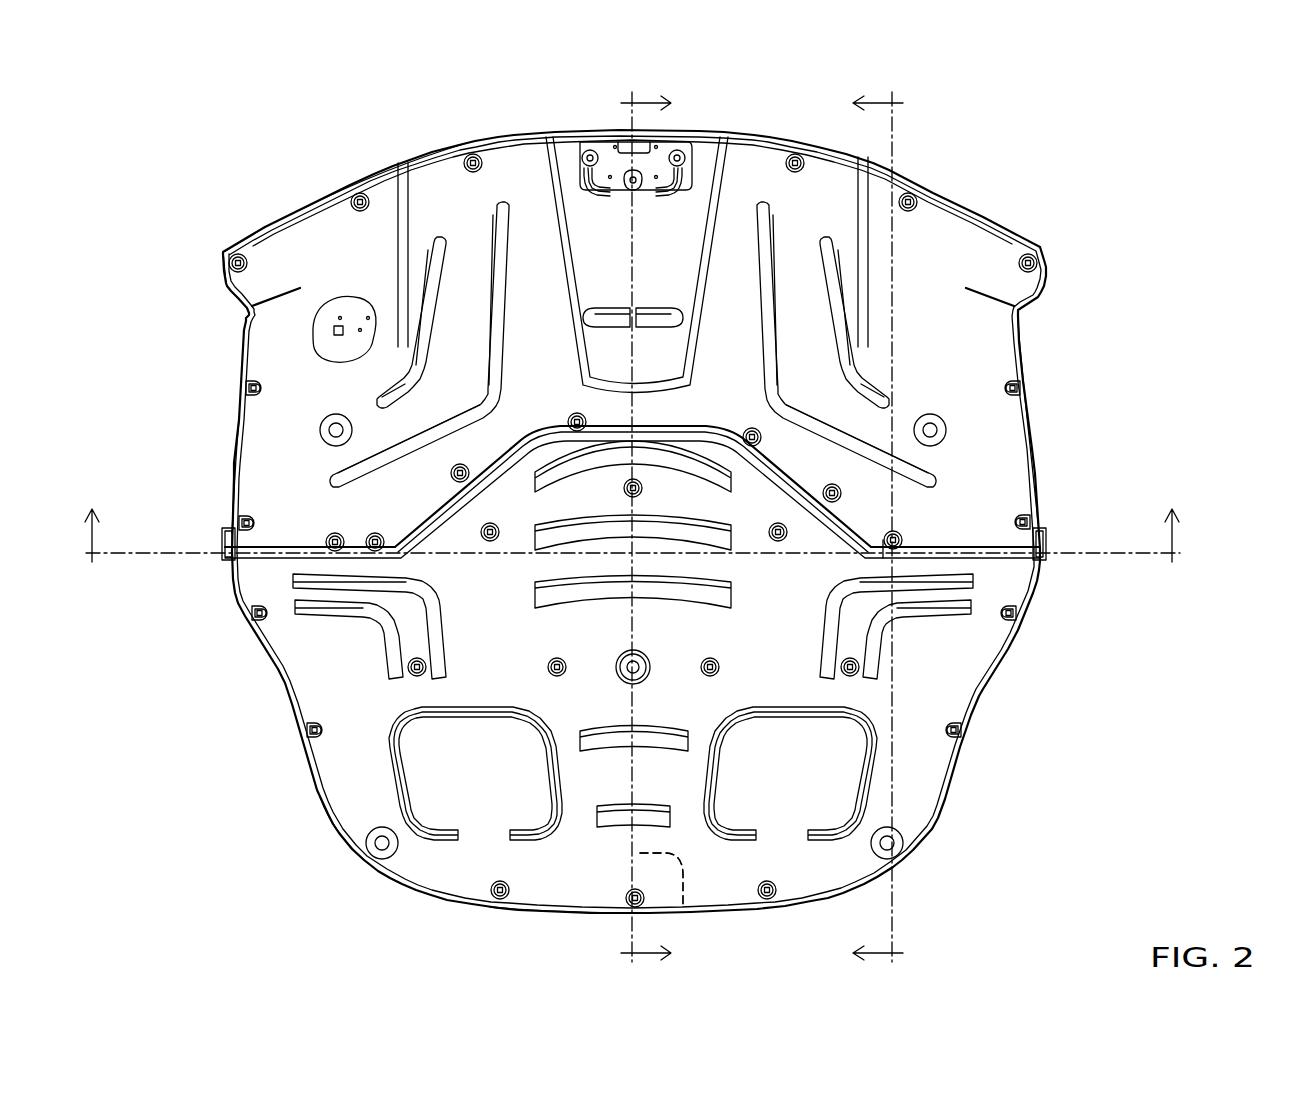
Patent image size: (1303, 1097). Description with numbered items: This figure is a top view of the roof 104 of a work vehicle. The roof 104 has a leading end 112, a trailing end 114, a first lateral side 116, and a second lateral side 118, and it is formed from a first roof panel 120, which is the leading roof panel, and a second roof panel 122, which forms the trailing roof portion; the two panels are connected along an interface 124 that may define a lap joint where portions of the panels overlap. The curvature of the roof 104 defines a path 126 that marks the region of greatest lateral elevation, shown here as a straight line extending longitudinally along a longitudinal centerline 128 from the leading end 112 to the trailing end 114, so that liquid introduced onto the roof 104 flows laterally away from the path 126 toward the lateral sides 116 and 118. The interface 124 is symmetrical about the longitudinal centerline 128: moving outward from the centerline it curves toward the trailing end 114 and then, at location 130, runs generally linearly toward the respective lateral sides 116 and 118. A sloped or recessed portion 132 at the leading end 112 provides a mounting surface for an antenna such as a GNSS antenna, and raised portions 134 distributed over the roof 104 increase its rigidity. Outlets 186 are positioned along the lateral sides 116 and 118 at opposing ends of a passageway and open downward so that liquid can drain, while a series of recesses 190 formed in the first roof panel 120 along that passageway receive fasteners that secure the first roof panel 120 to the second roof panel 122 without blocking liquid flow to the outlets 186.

The roof 104 is at (385, 168).
The leading end 112 is at (462, 141).
The trailing end 114 is at (532, 912).
The first lateral side 116 is at (268, 653).
The second lateral side 118 is at (1040, 458).
The first roof panel 120 is at (285, 193).
The second roof panel 122 is at (362, 868).
The interface 124 is at (950, 553).
The path 126 is at (683, 907).
The longitudinal centerline 128 is at (712, 943).
The location 130 is at (393, 542).
The recessed portion 132 is at (597, 135).
The raised portions 134 is at (826, 238).
The outlets 186 is at (226, 532).
The recesses 190 is at (898, 540).